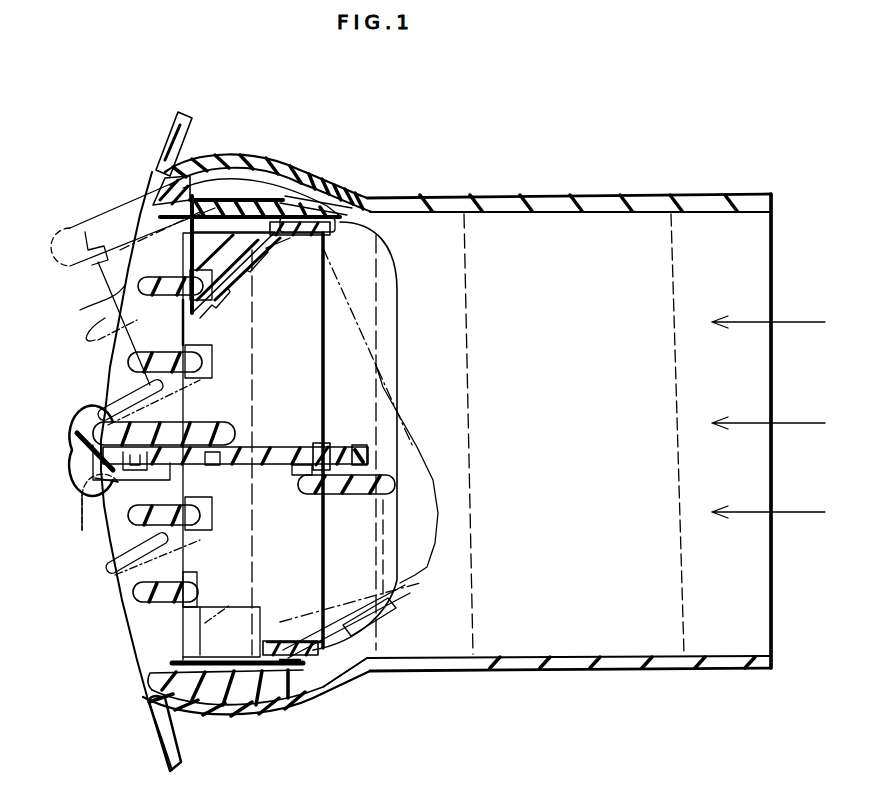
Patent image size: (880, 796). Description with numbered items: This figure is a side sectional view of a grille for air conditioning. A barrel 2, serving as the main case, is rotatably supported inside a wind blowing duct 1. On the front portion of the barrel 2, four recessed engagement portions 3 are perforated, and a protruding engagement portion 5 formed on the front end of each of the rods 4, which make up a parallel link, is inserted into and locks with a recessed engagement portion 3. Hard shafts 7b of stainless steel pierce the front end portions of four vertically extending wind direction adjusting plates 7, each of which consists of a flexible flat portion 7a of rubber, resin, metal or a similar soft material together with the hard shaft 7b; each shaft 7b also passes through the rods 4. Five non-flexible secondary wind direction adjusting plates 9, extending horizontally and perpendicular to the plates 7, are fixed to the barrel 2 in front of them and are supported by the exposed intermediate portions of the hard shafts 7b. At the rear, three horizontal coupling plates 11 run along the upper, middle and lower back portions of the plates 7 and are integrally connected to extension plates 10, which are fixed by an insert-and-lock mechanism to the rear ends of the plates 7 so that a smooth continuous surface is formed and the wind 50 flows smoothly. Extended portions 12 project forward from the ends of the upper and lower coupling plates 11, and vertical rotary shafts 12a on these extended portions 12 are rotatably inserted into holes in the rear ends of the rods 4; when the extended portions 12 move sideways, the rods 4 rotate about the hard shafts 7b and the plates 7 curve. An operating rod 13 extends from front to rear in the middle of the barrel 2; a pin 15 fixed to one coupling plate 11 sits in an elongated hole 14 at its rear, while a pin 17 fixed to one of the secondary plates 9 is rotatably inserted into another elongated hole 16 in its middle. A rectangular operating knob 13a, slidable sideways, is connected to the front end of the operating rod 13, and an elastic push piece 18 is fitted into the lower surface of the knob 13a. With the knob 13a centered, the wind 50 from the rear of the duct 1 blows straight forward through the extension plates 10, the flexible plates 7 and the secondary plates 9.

The wind blowing duct 1 is at (545, 196).
The barrel 2 is at (272, 162).
The recessed engagement portions 3 is at (195, 185).
The rods 4 is at (249, 198).
The protruding engagement portion 5 is at (150, 188).
The wind direction adjusting plates 7 is at (278, 355).
The flexible flat portion 7a is at (186, 330).
The hard shafts 7b is at (200, 250).
The secondary wind direction adjusting plates 9 is at (100, 305).
The extension plates 10 is at (398, 292).
The coupling plates 11 is at (347, 236).
The extended portions 12 is at (306, 238).
The rotary shafts 12a is at (285, 186).
The operating rod 13 is at (305, 444).
The operating knob 13a is at (78, 440).
The elongated hole 14 is at (348, 445).
The pin 15 is at (305, 472).
The elongated hole 16 is at (243, 446).
The pin 17 is at (210, 466).
The push piece 18 is at (98, 488).
The wind 50 is at (798, 322).